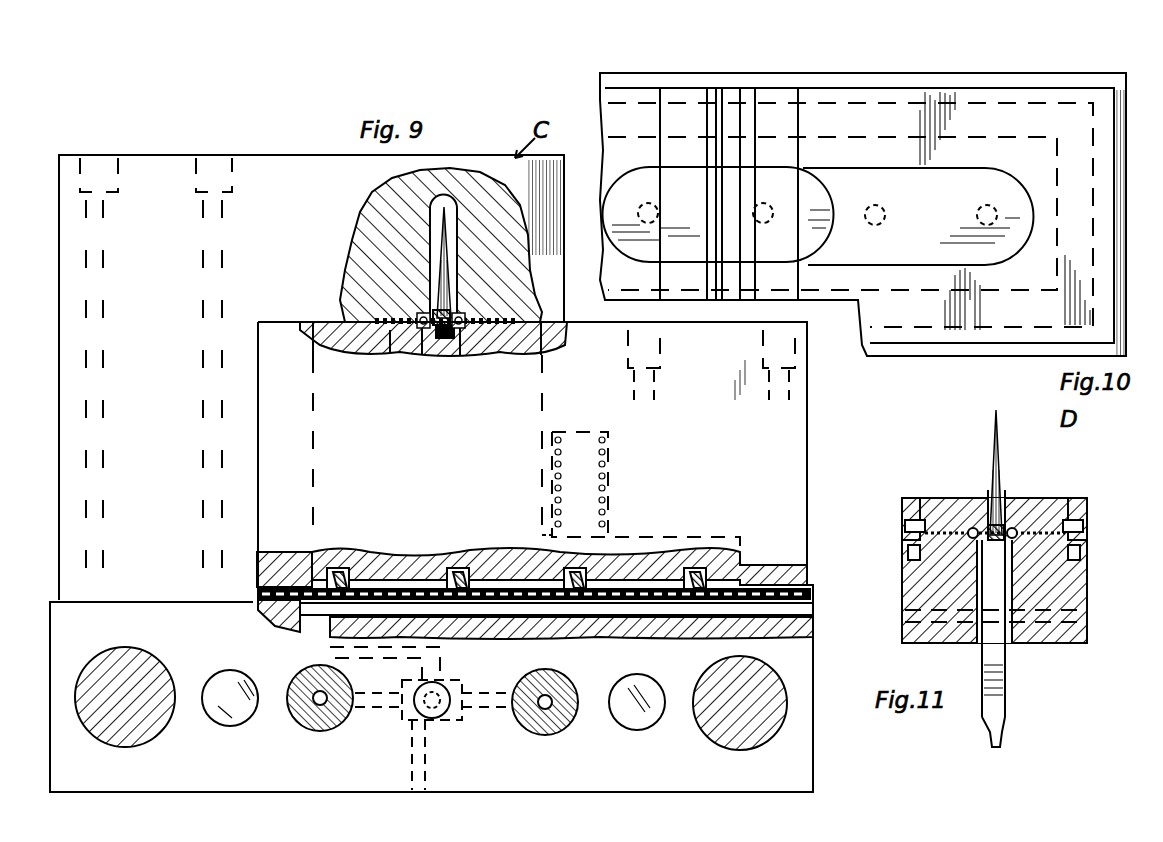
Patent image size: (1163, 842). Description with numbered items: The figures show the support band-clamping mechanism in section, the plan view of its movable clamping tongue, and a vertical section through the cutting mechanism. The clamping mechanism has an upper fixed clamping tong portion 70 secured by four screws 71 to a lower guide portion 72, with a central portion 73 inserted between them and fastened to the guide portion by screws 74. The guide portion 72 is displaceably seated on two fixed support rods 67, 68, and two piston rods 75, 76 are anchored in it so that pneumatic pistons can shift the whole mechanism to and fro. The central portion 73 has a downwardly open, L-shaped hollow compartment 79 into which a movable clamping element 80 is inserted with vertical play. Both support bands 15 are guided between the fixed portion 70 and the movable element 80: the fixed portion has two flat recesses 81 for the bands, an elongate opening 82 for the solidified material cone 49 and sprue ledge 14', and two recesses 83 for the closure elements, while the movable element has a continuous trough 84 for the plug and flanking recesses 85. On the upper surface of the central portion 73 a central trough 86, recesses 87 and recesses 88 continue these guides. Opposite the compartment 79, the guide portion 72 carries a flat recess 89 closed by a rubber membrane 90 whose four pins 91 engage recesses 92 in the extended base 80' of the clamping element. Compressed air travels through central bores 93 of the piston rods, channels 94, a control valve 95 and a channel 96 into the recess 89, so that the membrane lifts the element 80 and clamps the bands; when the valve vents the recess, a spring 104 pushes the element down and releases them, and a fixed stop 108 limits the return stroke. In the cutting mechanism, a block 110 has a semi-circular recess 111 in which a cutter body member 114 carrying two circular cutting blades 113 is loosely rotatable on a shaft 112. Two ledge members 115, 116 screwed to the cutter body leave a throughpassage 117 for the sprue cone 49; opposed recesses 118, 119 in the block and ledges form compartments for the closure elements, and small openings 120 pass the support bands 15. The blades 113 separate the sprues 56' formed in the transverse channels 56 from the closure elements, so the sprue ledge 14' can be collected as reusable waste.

In FIG. 9, the upper fixed clamping tong portion 70 is at (275, 160).
In FIG. 9, the screws 71 is at (102, 265).
In FIG. 9, the lower guide portion 72 is at (805, 762).
In FIG. 10, the lower guide portion 72 is at (900, 350).
In FIG. 9, the central portion 73 is at (790, 452).
In FIG. 10, the central portion 73 is at (940, 340).
In FIG. 9, the screws 74 is at (778, 390).
In FIG. 9, the hollow compartment 79 is at (545, 410).
In FIG. 9, the movable clamping element 80 is at (418, 315).
In FIG. 10, the movable clamping element 80 is at (718, 227).
In FIG. 9, the extended base of clamping element 80' is at (532, 548).
In FIG. 10, the extended base of clamping element 80' is at (946, 211).
In FIG. 9, the flat recesses 81 is at (380, 318).
In FIG. 9, the elongate opening 82 is at (460, 235).
In FIG. 9, the recesses 83 is at (380, 270).
In FIG. 9, the continuous trough 84 is at (445, 340).
In FIG. 10, the continuous trough 84 is at (748, 196).
In FIG. 9, the recesses 85 is at (422, 330).
In FIG. 10, the recesses 85 is at (708, 205).
In FIG. 10, the central trough 86 is at (738, 128).
In FIG. 10, the recesses 87 is at (707, 125).
In FIG. 9, the recesses 88 is at (380, 355).
In FIG. 10, the recesses 88 is at (672, 148).
In FIG. 9, the flat recess 89 is at (640, 612).
In FIG. 10, the flat recess 89 is at (1005, 285).
In FIG. 9, the rubber membrane 90 is at (530, 600).
In FIG. 10, the rubber membrane 90 is at (1022, 332).
In FIG. 9, the pins 91 is at (338, 566).
In FIG. 10, the pins 91 is at (885, 215).
In FIG. 9, the recesses 92 is at (458, 566).
In FIG. 10, the recesses 92 is at (970, 216).
In FIG. 9, the central bore 93 is at (292, 690).
In FIG. 9, the channels 94 is at (378, 710).
In FIG. 9, the control valve 95 is at (460, 680).
In FIG. 9, the channel 96 is at (362, 652).
In FIG. 9, the spring 104 is at (610, 457).
In FIG. 9, the fixed stop 108 is at (238, 715).
In FIG. 9, the piston rod 76 is at (305, 720).
In FIG. 9, the piston rod 75 is at (550, 720).
In FIG. 9, the support rod 68 is at (150, 665).
In FIG. 9, the support rod 67 is at (700, 732).
In FIG. 9, the material cone 49 is at (440, 222).
In FIG. 11, the material cone 49 is at (1000, 440).
In FIG. 9, the transverse channels 56 is at (487, 278).
In FIG. 11, the sprues 56' is at (974, 482).
In FIG. 9, the support band 15 is at (495, 315).
In FIG. 11, the support band 15 is at (1050, 522).
In FIG. 11, the sprue ledge 14' is at (1075, 561).
In FIG. 11, the block 110 is at (900, 605).
In FIG. 11, the semi-circular recess 111 is at (977, 580).
In FIG. 11, the shaft 112 is at (1055, 625).
In FIG. 11, the circular cutting blades 113 is at (1004, 742).
In FIG. 11, the cutter body member 114 is at (1000, 665).
In FIG. 11, the ledge member 115 is at (930, 500).
In FIG. 11, the ledge member 116 is at (1020, 522).
In FIG. 11, the throughpassage 117 is at (1005, 495).
In FIG. 11, the recess 118 is at (975, 525).
In FIG. 11, the recess 119 is at (908, 550).
In FIG. 11, the small opening 120 is at (905, 528).